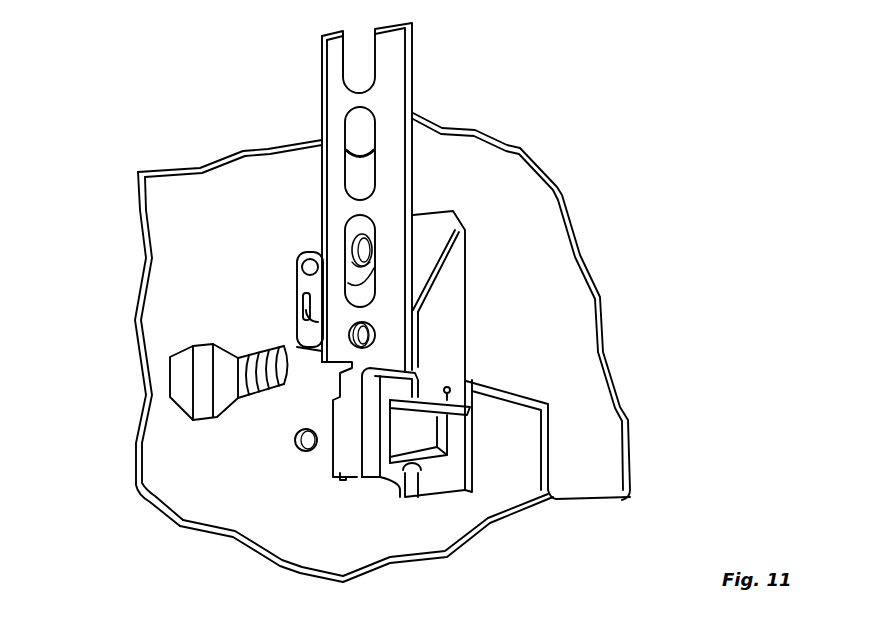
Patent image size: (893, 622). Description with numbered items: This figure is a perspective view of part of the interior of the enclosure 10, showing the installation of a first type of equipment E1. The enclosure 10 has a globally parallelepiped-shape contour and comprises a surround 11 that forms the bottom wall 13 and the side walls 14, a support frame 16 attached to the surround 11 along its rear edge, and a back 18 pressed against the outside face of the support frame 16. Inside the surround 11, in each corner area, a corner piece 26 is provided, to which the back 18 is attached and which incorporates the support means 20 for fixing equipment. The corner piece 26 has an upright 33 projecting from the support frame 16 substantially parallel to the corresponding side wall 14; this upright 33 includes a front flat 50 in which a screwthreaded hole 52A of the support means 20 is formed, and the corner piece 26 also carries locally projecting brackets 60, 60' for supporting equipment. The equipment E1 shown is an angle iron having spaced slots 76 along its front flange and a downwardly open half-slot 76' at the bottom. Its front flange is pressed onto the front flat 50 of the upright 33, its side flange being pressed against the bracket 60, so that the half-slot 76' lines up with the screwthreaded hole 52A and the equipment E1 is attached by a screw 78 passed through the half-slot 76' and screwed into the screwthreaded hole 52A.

The equipment E1 is at (430, 78).
The slots 76 is at (285, 182).
The support means 20 is at (350, 278).
The half-slot 76' is at (444, 326).
The bracket 60 is at (290, 335).
The screwthreaded hole 52A is at (95, 408).
The front flat 50 is at (357, 467).
The bracket 60' is at (549, 465).
The upright 33 is at (327, 412).
The screw 78 is at (193, 425).
The enclosure 10 is at (392, 347).
The surround 11 is at (167, 153).
The side walls 14 is at (183, 273).
The bottom wall 13 is at (417, 543).
The corner piece 26 is at (478, 506).
The support frame 16 is at (546, 437).
The back 18 is at (615, 348).